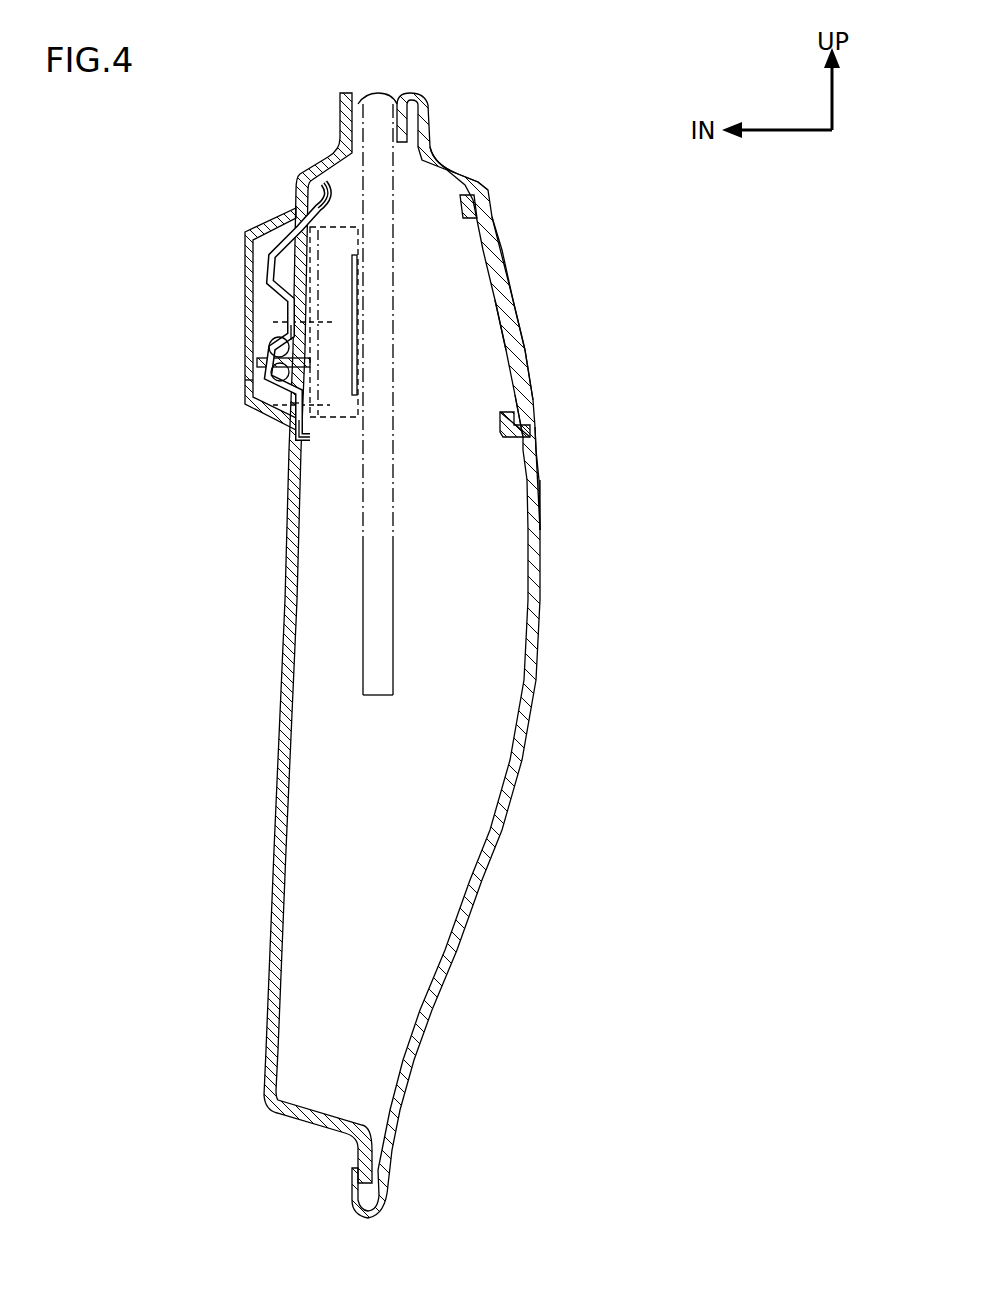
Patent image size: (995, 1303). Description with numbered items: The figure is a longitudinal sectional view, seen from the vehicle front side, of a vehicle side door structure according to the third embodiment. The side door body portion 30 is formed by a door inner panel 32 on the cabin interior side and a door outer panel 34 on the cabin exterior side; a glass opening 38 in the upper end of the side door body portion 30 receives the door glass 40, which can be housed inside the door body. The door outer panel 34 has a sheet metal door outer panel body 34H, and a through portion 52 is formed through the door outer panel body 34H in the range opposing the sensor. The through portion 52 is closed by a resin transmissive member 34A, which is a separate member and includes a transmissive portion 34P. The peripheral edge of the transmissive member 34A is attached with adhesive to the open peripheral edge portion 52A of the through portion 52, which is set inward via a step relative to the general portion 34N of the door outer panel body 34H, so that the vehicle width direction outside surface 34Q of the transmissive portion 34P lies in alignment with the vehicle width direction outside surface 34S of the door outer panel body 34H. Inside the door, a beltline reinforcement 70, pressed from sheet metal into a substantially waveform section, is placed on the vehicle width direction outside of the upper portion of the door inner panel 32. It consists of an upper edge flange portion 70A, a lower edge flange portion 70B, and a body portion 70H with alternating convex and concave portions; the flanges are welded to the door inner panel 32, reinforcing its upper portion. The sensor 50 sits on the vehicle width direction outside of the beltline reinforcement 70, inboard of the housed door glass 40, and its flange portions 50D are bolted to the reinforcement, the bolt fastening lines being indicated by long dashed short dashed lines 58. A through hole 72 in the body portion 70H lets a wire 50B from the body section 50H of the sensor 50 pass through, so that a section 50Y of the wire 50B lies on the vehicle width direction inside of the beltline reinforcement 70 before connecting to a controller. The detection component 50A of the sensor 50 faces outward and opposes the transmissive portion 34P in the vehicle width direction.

The side door body portion 30 is at (506, 118).
The door inner panel 32 is at (250, 233).
The door outer panel 34 is at (585, 549).
The transmissive member 34A is at (545, 353).
The door outer panel body 34H is at (552, 505).
The general portion 34N is at (540, 465).
The transmissive portion 34P is at (494, 368).
The vehicle width direction outside surface of the transmissive portion 34Q is at (520, 313).
The vehicle width direction outside surface of the door outer panel body 34S is at (535, 443).
The glass opening 38 is at (360, 100).
The door glass 40 is at (362, 530).
The sensor 50 is at (338, 221).
The detection component 50A is at (362, 280).
The wire 50B is at (257, 361).
The flange portions 50D is at (317, 347).
The body section 50H is at (333, 417).
The section of the wire 50Y is at (250, 392).
The through portion 52 is at (498, 412).
The open peripheral edge portion 52A is at (530, 400).
The long dashed short dashed lines 58 is at (273, 220).
The beltline reinforcement 70 is at (257, 300).
The upper edge flange portion 70A is at (318, 181).
The lower edge flange portion 70B is at (318, 440).
The body portion 70H is at (308, 333).
The through hole 72 is at (290, 403).